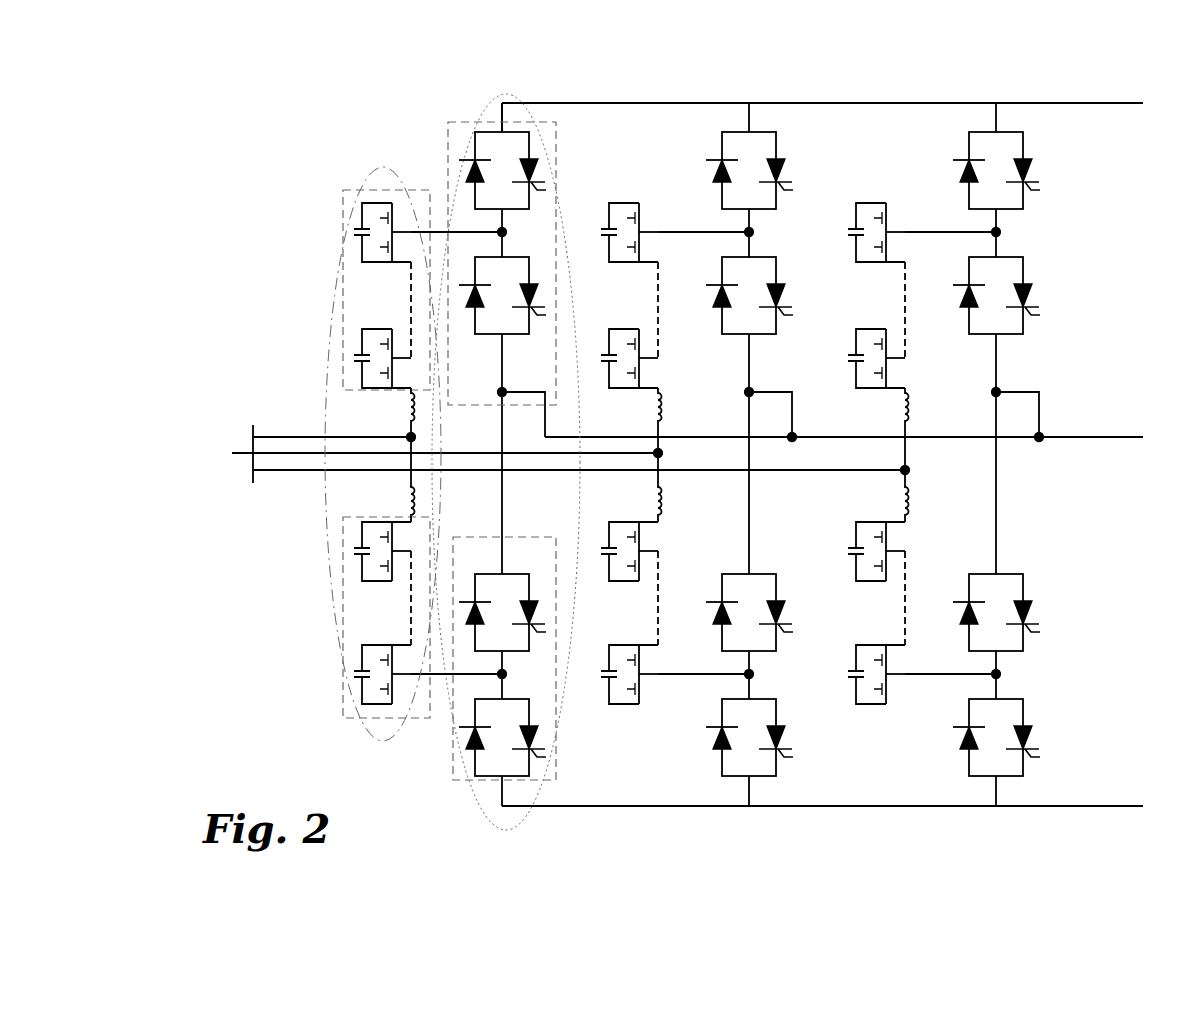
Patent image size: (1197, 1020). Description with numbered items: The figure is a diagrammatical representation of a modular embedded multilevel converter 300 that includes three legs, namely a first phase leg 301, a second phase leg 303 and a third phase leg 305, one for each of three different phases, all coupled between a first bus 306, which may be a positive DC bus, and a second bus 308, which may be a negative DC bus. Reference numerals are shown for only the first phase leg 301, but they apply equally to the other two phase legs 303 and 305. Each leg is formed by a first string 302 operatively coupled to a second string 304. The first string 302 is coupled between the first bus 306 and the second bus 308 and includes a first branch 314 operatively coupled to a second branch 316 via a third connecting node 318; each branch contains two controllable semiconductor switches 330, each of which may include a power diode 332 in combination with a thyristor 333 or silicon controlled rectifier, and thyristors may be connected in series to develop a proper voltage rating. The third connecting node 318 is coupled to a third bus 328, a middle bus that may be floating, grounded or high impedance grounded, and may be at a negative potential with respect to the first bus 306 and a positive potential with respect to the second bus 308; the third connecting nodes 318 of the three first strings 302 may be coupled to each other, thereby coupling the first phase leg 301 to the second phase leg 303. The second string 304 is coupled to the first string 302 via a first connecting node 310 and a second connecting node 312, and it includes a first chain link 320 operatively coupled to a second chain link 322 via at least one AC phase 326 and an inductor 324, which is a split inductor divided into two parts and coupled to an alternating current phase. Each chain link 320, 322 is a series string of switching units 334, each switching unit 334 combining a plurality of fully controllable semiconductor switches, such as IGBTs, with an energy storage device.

The modular embedded multilevel converter 300 is at (290, 147).
The first phase leg 301 is at (502, 114).
The first string 302 is at (476, 804).
The second phase leg 303 is at (749, 118).
The second string 304 is at (323, 372).
The third phase leg 305 is at (996, 118).
The first bus 306 is at (1115, 103).
The second bus 308 is at (1115, 806).
The first connecting node 310 is at (504, 235).
The second connecting node 312 is at (505, 677).
The first branch 314 is at (521, 170).
The second branch 316 is at (451, 768).
The third connecting node 318 is at (501, 391).
The first chain link 320 is at (340, 207).
The second chain link 322 is at (340, 540).
The inductor 324 is at (408, 405).
The AC phase 326 is at (286, 437).
The third bus 328 is at (1086, 437).
The controllable semiconductor switch 330 is at (446, 137).
The power diode 332 is at (470, 172).
The thyristor 333 is at (538, 180).
The switching unit 334 is at (356, 272).